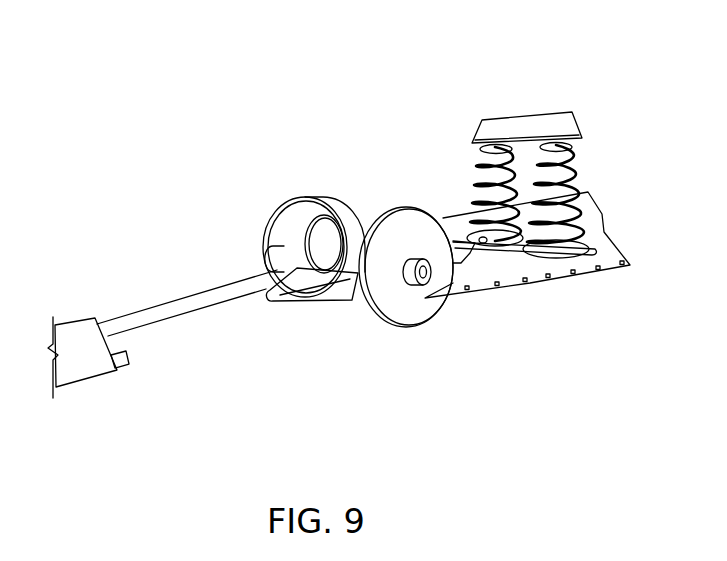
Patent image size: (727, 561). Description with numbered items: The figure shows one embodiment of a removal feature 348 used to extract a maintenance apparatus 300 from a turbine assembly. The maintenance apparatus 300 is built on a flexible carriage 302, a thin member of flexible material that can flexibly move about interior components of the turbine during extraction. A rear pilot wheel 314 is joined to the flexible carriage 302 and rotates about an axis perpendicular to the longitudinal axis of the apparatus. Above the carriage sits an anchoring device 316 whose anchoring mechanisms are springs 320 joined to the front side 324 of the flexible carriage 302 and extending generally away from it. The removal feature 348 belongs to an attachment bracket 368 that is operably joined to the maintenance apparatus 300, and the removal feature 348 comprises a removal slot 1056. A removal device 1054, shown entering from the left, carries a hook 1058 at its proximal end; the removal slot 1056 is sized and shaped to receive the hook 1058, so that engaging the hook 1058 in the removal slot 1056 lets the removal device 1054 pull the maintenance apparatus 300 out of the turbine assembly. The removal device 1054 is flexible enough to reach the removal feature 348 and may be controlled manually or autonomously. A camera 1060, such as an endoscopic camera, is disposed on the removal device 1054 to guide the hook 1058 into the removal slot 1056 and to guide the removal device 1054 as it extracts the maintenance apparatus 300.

The maintenance apparatus 300 is at (327, 64).
The flexible carriage 302 is at (537, 267).
The rear pilot wheel 314 is at (400, 310).
The anchoring device 316 is at (527, 125).
The spring 320 is at (477, 177).
The front side 324 is at (471, 241).
The removal feature 348 is at (296, 303).
The attachment bracket 368 is at (310, 312).
The removal device 1054 is at (153, 294).
The removal slot 1056 is at (358, 297).
The hook 1058 is at (270, 250).
The camera 1060 is at (124, 371).